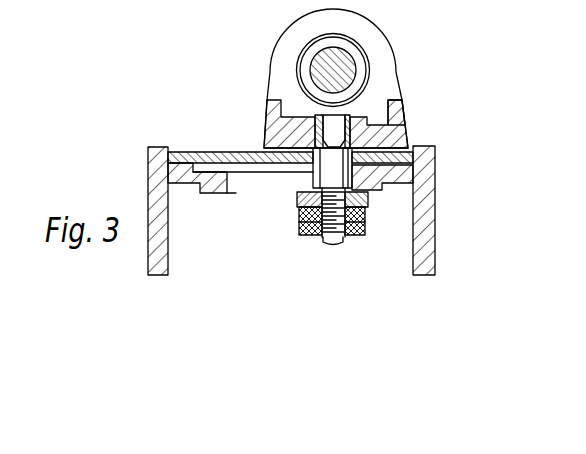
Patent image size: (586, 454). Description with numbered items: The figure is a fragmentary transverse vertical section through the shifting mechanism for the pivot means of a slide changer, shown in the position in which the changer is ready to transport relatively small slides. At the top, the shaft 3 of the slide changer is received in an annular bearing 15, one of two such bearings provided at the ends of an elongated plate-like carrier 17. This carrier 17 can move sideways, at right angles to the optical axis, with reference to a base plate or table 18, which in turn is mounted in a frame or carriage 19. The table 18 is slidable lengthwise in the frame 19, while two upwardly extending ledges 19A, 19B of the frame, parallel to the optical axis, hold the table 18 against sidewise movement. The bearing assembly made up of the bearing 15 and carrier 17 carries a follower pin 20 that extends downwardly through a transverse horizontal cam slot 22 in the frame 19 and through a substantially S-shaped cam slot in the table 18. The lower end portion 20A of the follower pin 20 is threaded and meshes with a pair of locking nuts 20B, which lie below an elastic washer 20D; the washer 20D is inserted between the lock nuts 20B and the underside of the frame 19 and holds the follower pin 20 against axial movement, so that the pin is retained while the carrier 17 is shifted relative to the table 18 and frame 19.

The shaft 3 is at (338, 68).
The annular bearing 15 is at (387, 65).
The plate-like carrier 17 is at (395, 112).
The table 18 is at (223, 153).
The frame 19 is at (305, 188).
The ledge 19A is at (158, 147).
The ledge 19B is at (433, 145).
The follower pin 20 is at (305, 174).
The lower end portion 20A is at (335, 243).
The locking nuts 20B is at (317, 234).
The elastic washer 20D is at (366, 208).
The cam slot 22 is at (252, 183).